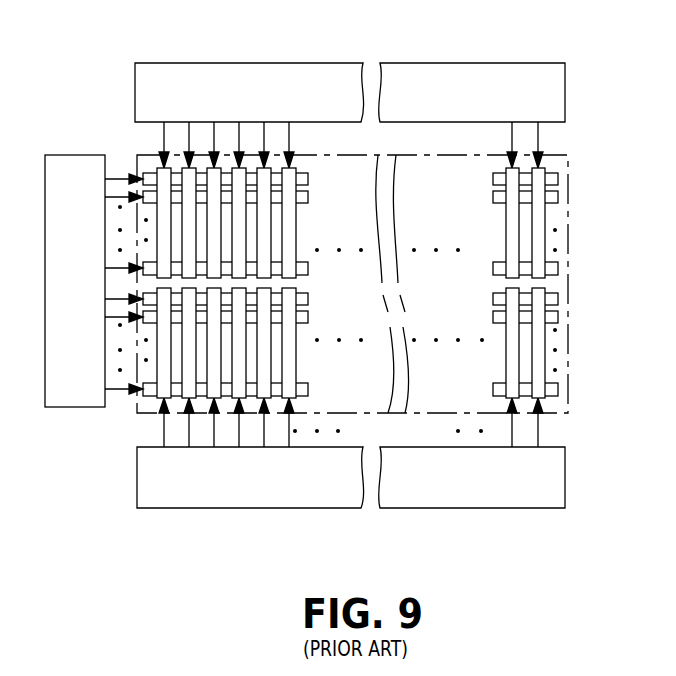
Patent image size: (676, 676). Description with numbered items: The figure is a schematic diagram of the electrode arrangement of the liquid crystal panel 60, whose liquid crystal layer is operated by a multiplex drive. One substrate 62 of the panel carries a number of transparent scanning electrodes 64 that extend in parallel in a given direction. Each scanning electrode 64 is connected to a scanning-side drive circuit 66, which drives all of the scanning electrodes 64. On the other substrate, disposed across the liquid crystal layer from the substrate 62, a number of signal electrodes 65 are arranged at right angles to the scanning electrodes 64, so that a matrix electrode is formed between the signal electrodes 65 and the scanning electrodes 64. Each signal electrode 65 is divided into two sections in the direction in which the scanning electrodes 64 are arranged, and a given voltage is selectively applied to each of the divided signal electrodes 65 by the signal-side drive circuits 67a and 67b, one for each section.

The liquid crystal panel 60 is at (374, 248).
The substrate 62 is at (567, 285).
The scanning electrodes 64 is at (308, 197).
The signal electrodes 65 is at (296, 252).
The scanning-side drive circuit 66 is at (75, 407).
The signal-side drive circuit 67a is at (313, 63).
The signal-side drive circuit 67b is at (248, 508).